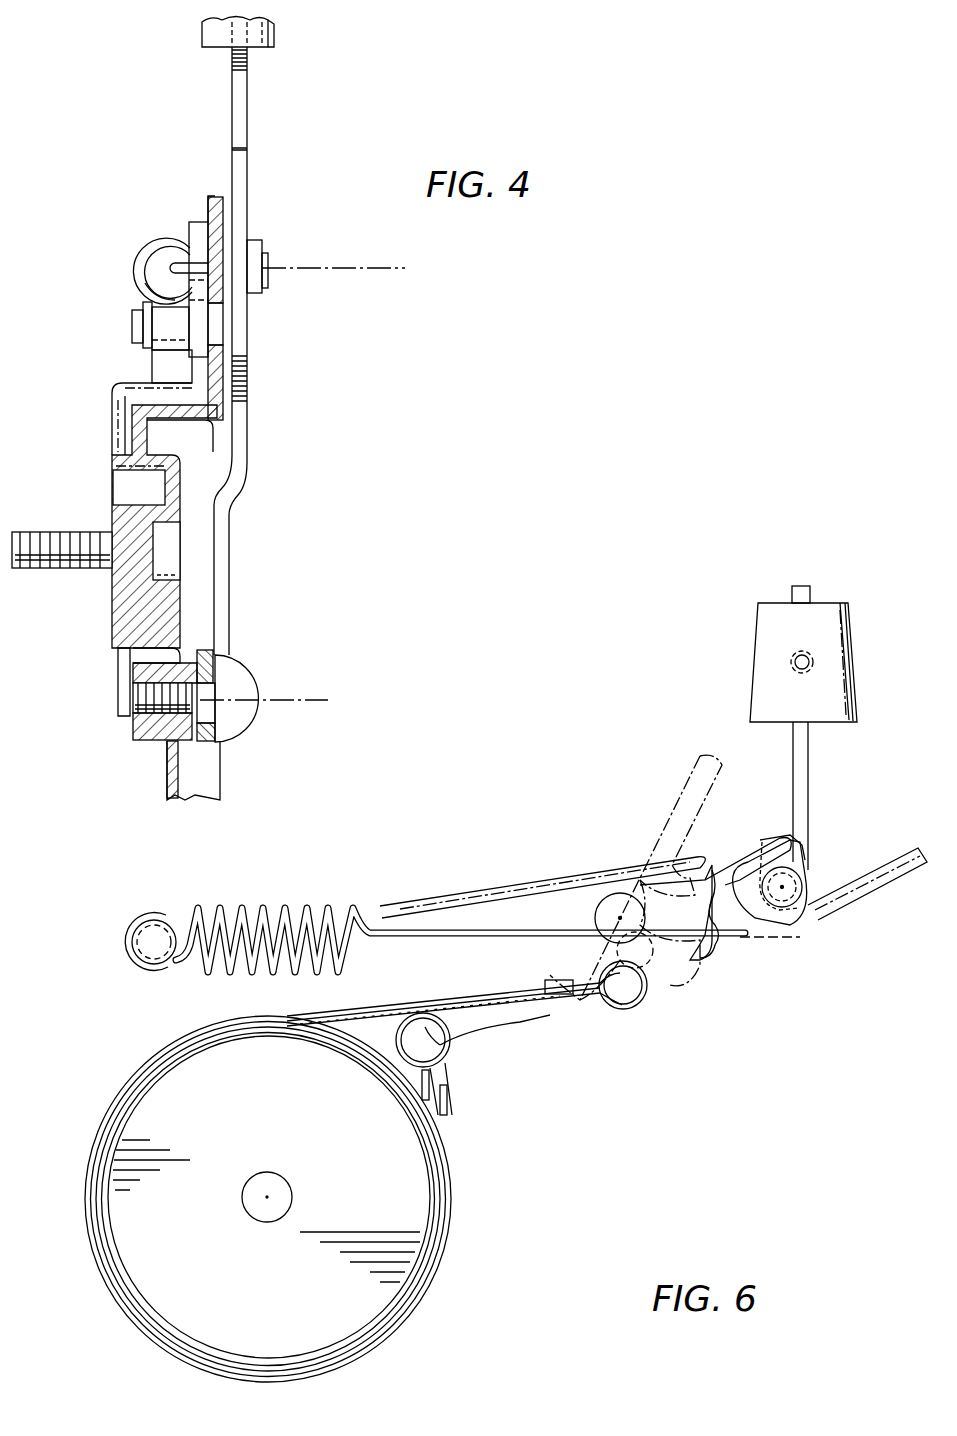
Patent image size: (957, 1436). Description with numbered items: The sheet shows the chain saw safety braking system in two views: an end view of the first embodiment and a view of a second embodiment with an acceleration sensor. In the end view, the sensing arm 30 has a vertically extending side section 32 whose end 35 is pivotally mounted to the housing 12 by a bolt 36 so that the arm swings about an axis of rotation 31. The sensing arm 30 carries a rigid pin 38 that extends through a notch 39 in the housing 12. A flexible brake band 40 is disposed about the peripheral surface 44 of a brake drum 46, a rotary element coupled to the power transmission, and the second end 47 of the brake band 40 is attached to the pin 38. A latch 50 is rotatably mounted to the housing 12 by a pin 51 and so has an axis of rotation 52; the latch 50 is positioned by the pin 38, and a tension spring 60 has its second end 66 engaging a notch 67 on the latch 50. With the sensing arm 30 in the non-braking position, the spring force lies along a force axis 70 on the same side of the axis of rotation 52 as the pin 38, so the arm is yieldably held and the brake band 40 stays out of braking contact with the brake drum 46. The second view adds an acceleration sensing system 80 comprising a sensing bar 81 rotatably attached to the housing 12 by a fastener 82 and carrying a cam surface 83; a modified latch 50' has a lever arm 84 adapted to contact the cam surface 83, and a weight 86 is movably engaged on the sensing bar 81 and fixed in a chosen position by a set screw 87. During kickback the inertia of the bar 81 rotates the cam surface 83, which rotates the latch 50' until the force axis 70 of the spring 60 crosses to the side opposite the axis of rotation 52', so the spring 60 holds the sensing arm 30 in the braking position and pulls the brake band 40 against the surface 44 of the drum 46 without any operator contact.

In FIG. 4, the housing 12 is at (167, 768).
In FIG. 4, the sensing arm 30 is at (275, 47).
In FIG. 4, the axis of rotation 31 is at (305, 702).
In FIG. 4, the side section 32 is at (247, 446).
In FIG. 4, the end 35 is at (213, 660).
In FIG. 4, the bolt 36 is at (236, 680).
In FIG. 4, the rigid pin 38 is at (132, 325).
In FIG. 4, the notch 39 is at (228, 362).
In FIG. 4, the brake band 40 is at (152, 366).
In FIG. 6, the brake band 40 is at (462, 1005).
In FIG. 4, the peripheral surface 44 is at (114, 388).
In FIG. 4, the brake drum 46 is at (114, 425).
In FIG. 4, the second end 47 is at (150, 275).
In FIG. 4, the latch 50 is at (203, 249).
In FIG. 6, the latch 50' is at (680, 865).
In FIG. 4, the pin 51 is at (266, 253).
In FIG. 4, the axis of rotation 52 is at (333, 247).
In FIG. 6, the axis of rotation 52' is at (572, 918).
In FIG. 4, the tension spring 60 is at (168, 236).
In FIG. 6, the tension spring 60 is at (262, 905).
In FIG. 4, the second end 66 is at (162, 256).
In FIG. 4, the notch 67 is at (198, 258).
In FIG. 6, the force axis 70 is at (528, 902).
In FIG. 6, the acceleration sensing system 80 is at (845, 800).
In FIG. 6, the sensing bar 81 is at (808, 760).
In FIG. 6, the fastener 82 is at (800, 880).
In FIG. 6, the cam surface 83 is at (770, 840).
In FIG. 6, the lever arm 84 is at (665, 760).
In FIG. 6, the weight 86 is at (857, 650).
In FIG. 6, the set screw 87 is at (792, 660).